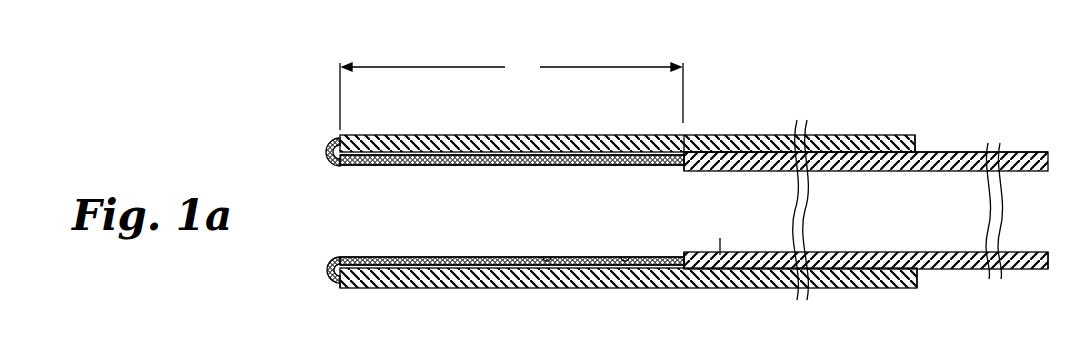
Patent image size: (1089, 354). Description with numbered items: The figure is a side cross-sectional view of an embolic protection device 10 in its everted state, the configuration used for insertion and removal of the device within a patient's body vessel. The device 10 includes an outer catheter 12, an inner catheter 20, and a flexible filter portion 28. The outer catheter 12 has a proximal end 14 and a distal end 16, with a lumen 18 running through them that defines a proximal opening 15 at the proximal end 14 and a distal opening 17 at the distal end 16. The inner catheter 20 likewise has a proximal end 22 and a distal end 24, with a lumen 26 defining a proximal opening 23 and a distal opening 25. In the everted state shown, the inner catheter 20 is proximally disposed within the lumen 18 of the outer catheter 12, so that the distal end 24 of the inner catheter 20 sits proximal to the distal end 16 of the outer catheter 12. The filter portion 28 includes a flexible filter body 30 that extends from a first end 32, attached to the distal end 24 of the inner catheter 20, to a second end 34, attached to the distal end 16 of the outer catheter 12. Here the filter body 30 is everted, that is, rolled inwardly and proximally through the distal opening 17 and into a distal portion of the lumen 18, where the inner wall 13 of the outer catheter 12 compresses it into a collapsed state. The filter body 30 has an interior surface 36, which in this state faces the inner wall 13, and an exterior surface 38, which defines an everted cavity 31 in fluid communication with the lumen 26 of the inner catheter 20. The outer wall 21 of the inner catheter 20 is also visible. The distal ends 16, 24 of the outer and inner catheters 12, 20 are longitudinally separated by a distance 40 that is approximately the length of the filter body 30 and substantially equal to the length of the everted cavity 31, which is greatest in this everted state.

The embolic protection device 10 is at (790, 104).
The outer catheter 12 is at (736, 136).
The inner wall 13 is at (623, 262).
The proximal end 14 is at (887, 136).
The proximal opening 15 is at (920, 148).
The distal end 16 is at (353, 136).
The distal opening 17 is at (334, 222).
The lumen 18 is at (430, 158).
The inner catheter 20 is at (766, 140).
The outer wall 21 is at (937, 272).
The proximal end 22 is at (1030, 272).
The proximal opening 23 is at (1016, 212).
The distal end 24 is at (690, 134).
The distal opening 25 is at (680, 228).
The lumen 26 is at (724, 270).
The filter portion 28 is at (330, 181).
The filter body 30 is at (590, 268).
The everted cavity 31 is at (547, 177).
The first end 32 is at (683, 172).
The second end 34 is at (337, 284).
The interior surface 36 is at (464, 262).
The exterior surface 38 is at (541, 266).
The distance 40 is at (511, 93).